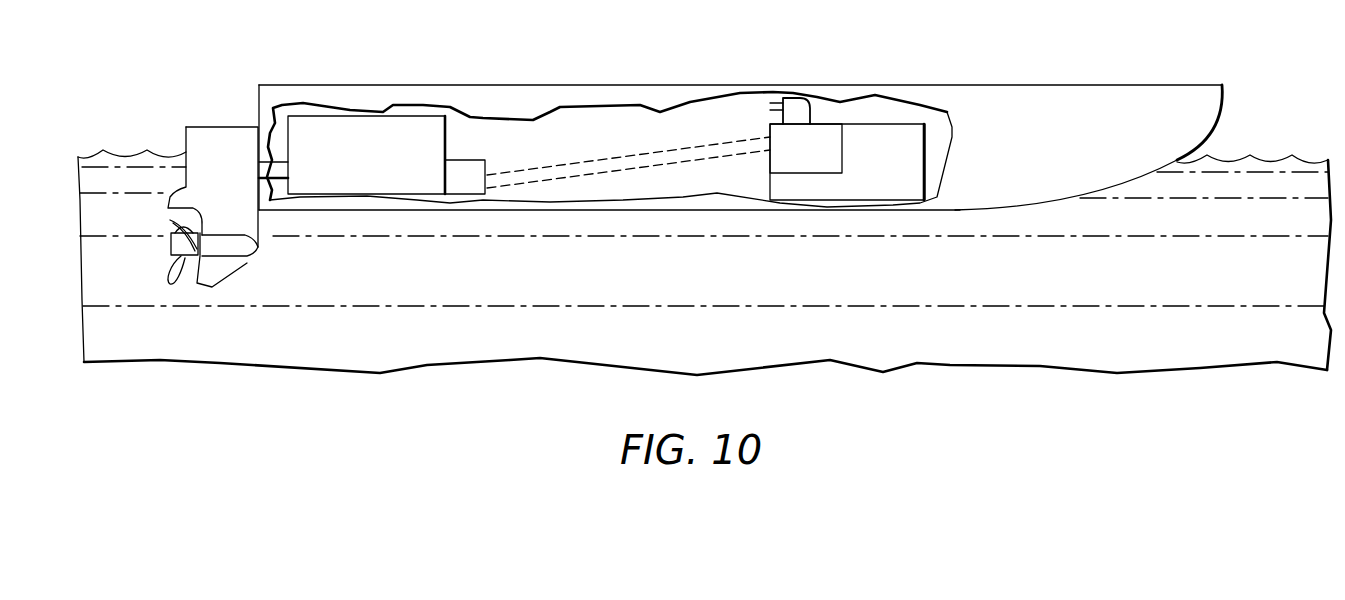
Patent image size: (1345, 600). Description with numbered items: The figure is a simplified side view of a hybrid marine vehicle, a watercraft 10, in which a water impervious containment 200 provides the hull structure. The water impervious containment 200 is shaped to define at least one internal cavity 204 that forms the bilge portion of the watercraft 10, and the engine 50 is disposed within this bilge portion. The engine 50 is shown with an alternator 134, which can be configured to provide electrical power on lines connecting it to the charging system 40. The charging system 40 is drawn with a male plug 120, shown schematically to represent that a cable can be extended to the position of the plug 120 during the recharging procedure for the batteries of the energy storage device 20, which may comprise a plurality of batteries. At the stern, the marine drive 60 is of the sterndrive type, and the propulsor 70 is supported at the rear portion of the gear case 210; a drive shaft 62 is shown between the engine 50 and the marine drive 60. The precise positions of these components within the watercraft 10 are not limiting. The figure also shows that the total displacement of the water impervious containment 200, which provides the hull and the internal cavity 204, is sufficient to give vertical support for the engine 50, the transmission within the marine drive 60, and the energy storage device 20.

The watercraft 10 is at (1072, 88).
The energy storage device 20 is at (897, 133).
The charging system 40 is at (787, 160).
The engine 50 is at (353, 140).
The marine drive 60 is at (219, 147).
The drive shaft 62 is at (281, 167).
The propulsor 70 is at (170, 245).
The male plug 120 is at (793, 107).
The alternator 134 is at (473, 163).
The water impervious containment 200 is at (1213, 127).
The internal cavity 204 is at (592, 130).
The gear case 210 is at (230, 250).